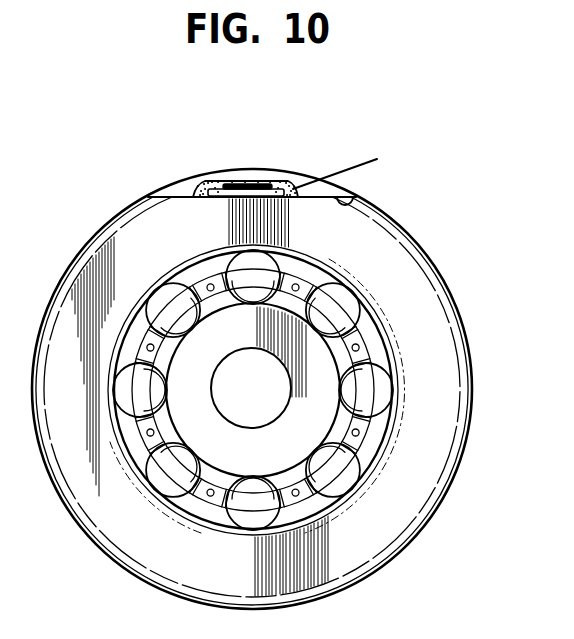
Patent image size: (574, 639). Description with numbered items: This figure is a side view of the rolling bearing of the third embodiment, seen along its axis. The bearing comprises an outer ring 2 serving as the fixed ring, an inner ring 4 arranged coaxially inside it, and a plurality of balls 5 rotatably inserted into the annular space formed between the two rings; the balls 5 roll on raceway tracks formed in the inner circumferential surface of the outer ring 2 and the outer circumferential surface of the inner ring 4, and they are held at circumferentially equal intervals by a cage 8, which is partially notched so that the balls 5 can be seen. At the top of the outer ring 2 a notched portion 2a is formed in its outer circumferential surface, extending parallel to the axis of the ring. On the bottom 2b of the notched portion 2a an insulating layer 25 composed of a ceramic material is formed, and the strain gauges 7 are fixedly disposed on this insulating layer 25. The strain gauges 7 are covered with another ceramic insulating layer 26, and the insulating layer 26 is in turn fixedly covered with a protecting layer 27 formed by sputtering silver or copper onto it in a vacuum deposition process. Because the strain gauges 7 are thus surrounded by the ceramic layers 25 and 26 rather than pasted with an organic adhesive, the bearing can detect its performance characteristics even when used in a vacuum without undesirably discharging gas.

The outer ring 2 is at (412, 242).
The notched portion 2a is at (292, 178).
The bottom of the notched portion 2b is at (352, 199).
The inner ring 4 is at (320, 387).
The balls 5 is at (348, 303).
The strain gauges 7 is at (209, 183).
The cage 8 is at (337, 465).
The insulating layer 25 is at (194, 195).
The insulating layer 26 is at (242, 189).
The protecting layer 27 is at (259, 184).